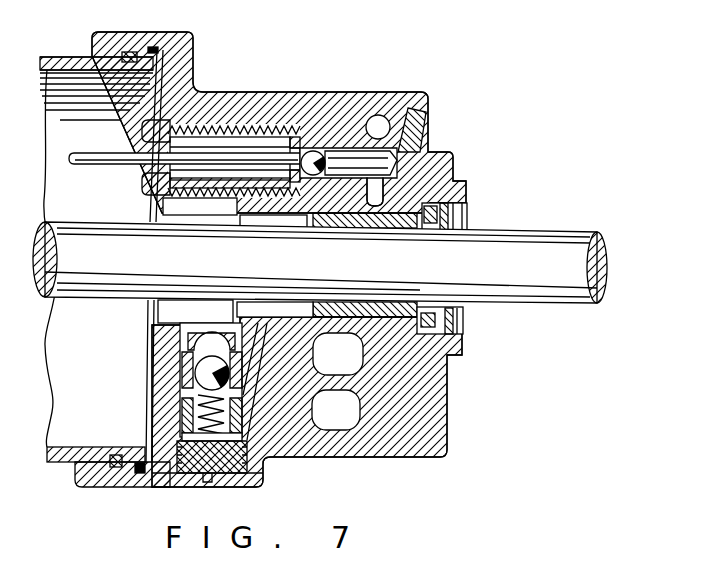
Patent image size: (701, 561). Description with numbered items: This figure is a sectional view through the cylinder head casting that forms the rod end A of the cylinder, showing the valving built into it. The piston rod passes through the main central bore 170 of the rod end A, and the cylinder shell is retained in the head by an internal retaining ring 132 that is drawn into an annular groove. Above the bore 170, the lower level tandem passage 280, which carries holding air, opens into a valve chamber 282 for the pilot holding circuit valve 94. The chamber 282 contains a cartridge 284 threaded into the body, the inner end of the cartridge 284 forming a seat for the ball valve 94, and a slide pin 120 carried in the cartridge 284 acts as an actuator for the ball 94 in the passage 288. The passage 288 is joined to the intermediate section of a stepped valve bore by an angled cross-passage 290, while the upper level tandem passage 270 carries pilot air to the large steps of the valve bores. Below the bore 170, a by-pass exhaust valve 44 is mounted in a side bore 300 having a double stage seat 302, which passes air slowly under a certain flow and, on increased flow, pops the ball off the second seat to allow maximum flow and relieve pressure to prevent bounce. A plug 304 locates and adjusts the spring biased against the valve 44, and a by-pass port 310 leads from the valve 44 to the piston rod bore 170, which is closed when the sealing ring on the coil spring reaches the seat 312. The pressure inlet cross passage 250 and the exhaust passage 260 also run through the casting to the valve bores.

The rod end A is at (201, 92).
The lower level tandem passage 280 is at (218, 115).
The valve chamber 282 is at (282, 134).
The pilot holding circuit valve 94 is at (320, 150).
The upper level tandem passage 270 is at (382, 115).
The cartridge 284 is at (145, 120).
The slide pin 120 is at (127, 156).
The seat 312 is at (240, 202).
The passage 288 is at (393, 164).
The angled cross-passage 290 is at (382, 188).
The main central bore 170 is at (309, 205).
The seat 302 is at (212, 333).
The by-pass port 310 is at (258, 323).
The by-pass exhaust 44 is at (200, 373).
The internal retaining ring 132 is at (118, 455).
The plug 304 is at (193, 470).
The side bore 300 is at (240, 430).
The exhaust passage 260 is at (352, 362).
The cross passage 250 is at (347, 412).